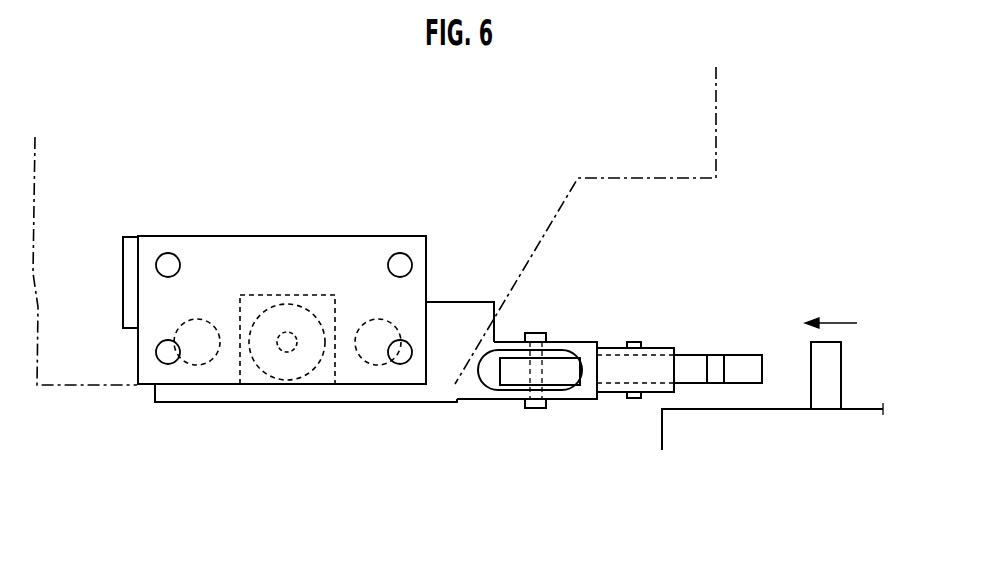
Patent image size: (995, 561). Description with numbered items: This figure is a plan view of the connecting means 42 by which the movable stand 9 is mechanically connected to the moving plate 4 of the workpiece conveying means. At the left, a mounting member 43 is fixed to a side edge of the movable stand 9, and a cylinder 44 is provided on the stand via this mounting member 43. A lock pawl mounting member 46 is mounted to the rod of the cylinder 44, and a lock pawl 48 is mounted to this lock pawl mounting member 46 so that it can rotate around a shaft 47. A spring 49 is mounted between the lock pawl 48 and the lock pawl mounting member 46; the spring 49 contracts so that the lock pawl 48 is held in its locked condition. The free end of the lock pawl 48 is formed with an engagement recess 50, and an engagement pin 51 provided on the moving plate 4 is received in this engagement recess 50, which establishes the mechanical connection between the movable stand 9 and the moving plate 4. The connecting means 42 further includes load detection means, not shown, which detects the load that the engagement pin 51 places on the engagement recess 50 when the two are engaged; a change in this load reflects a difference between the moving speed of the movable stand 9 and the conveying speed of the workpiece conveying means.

The moving plate 4 is at (857, 408).
The movable stand 9 is at (716, 130).
The connecting means 42 is at (543, 456).
The mounting member 43 is at (300, 236).
The cylinder 44 is at (335, 362).
The lock pawl mounting member 46 is at (455, 302).
The shaft 47 is at (540, 333).
The lock pawl 48 is at (742, 355).
The spring 49 is at (630, 342).
The engagement recess 50 is at (692, 360).
The engagement pin 51 is at (841, 358).